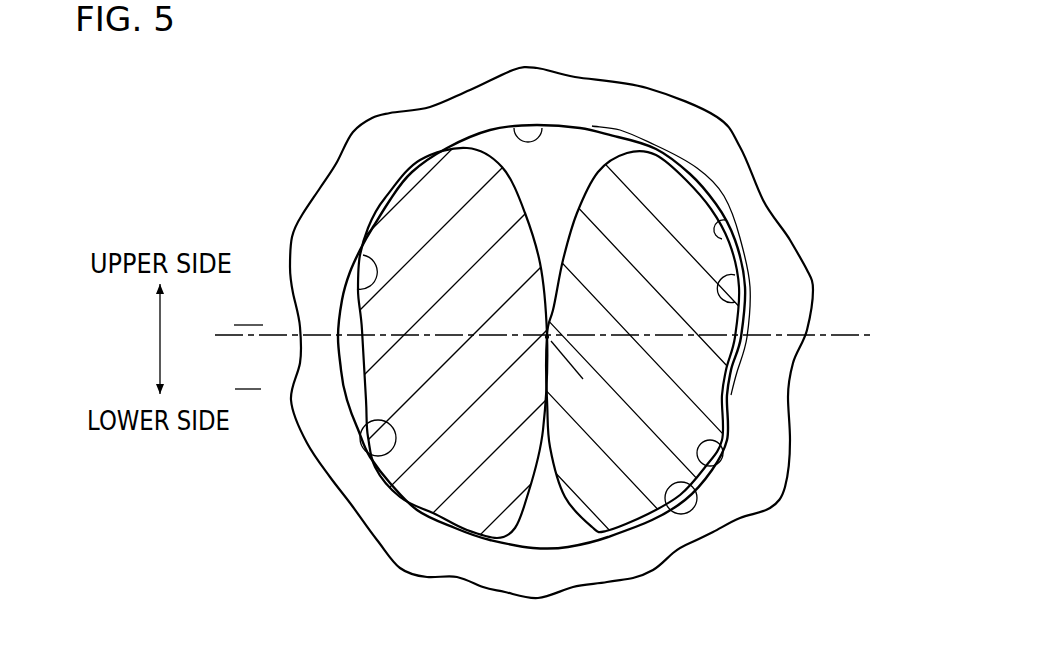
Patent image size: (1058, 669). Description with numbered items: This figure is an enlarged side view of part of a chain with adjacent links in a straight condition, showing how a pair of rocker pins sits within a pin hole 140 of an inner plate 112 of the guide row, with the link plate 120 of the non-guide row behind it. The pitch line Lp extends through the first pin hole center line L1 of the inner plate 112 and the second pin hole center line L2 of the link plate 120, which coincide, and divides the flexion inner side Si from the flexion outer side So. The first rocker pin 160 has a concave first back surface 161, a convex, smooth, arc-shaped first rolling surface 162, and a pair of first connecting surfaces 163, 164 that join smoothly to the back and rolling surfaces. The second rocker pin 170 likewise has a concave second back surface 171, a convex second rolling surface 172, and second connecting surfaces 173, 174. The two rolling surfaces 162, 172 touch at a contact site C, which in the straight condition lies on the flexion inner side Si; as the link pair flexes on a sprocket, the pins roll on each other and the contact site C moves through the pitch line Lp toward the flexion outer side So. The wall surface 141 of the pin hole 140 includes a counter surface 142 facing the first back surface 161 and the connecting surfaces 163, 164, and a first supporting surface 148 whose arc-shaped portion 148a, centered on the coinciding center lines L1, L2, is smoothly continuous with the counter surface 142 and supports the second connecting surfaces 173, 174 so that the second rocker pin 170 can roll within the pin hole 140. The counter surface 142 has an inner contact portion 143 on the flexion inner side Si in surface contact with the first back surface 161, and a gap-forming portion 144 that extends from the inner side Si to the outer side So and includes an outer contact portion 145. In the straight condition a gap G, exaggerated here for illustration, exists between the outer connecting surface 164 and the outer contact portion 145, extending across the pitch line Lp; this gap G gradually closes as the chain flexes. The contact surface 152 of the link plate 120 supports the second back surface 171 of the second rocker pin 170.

The inner plate 112 is at (757, 477).
The link plate 120 is at (358, 370).
The pin hole 140 is at (585, 142).
The wall surface 141 is at (538, 126).
The counter surface 142 is at (707, 462).
The inner contact portion 143 is at (693, 491).
The gap-forming portion 144 is at (743, 272).
The outer contact portion 145 is at (725, 220).
The first supporting surface 148 is at (528, 563).
The arc-shaped portion 148a is at (377, 460).
The contact surface 152 is at (363, 256).
The first rocker pin 160 is at (629, 215).
The first back surface 161 is at (730, 391).
The first rolling surface 162 is at (577, 199).
The first connecting surface 163 is at (652, 524).
The first connecting surface 164 is at (682, 167).
The second rocker pin 170 is at (435, 185).
The second back surface 171 is at (367, 322).
The second rolling surface 172 is at (540, 249).
The second connecting surface 173 is at (415, 507).
The second connecting surface 174 is at (397, 190).
The contact site C is at (547, 389).
The gap G is at (746, 303).
The first pin hole center line L1 is at (551, 341).
The second pin hole center line L2 is at (567, 360).
The pitch line Lp is at (868, 333).
The flexion outer side So is at (249, 312).
The flexion inner side Si is at (248, 376).